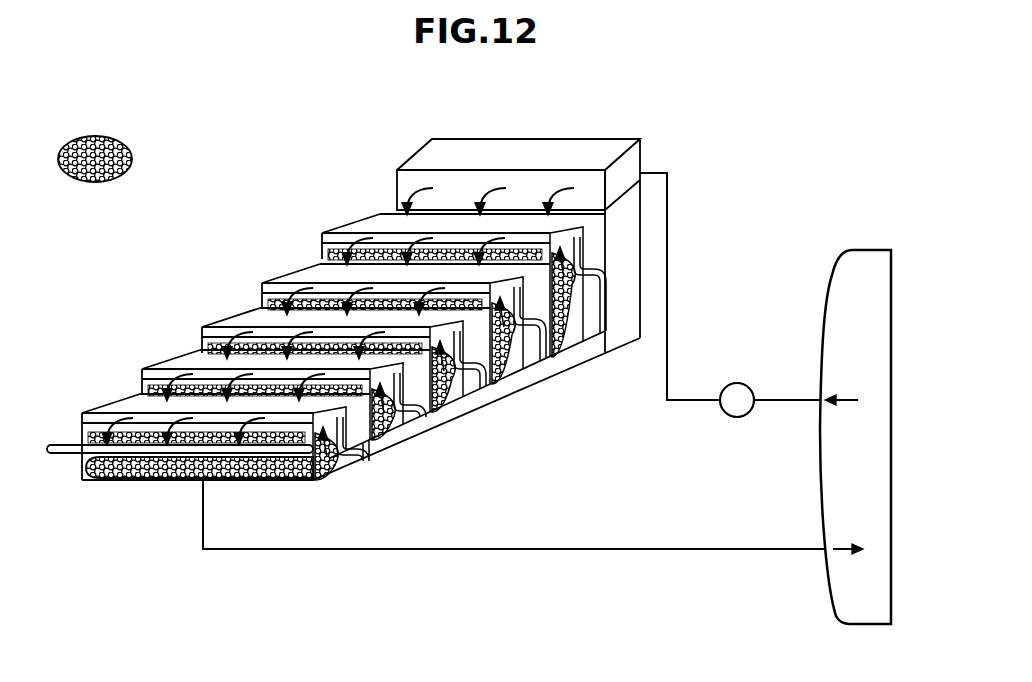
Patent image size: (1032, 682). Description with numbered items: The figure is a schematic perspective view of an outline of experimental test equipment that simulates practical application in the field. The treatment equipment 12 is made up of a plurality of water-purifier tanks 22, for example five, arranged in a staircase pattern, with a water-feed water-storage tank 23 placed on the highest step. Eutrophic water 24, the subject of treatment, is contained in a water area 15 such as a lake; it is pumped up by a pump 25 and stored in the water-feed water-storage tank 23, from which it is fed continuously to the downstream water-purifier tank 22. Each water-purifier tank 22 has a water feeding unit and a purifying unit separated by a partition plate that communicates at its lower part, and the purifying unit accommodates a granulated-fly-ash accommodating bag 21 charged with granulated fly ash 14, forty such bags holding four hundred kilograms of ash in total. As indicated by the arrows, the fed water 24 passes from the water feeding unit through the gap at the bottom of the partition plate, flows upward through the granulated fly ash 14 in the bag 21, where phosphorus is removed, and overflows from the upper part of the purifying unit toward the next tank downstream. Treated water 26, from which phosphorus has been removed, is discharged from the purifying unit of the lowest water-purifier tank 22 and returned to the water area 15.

The treatment equipment 12 is at (447, 128).
The granulated fly ash 14 is at (132, 158).
The water area 15 is at (848, 597).
The granulated-fly-ash accommodating bag 21 is at (122, 143).
The water-purifier tank 22 is at (590, 335).
The water-feed water-storage tank 23 is at (590, 138).
The eutrophic water 24 is at (535, 139).
The pump 25 is at (737, 383).
The treated water 26 is at (470, 550).